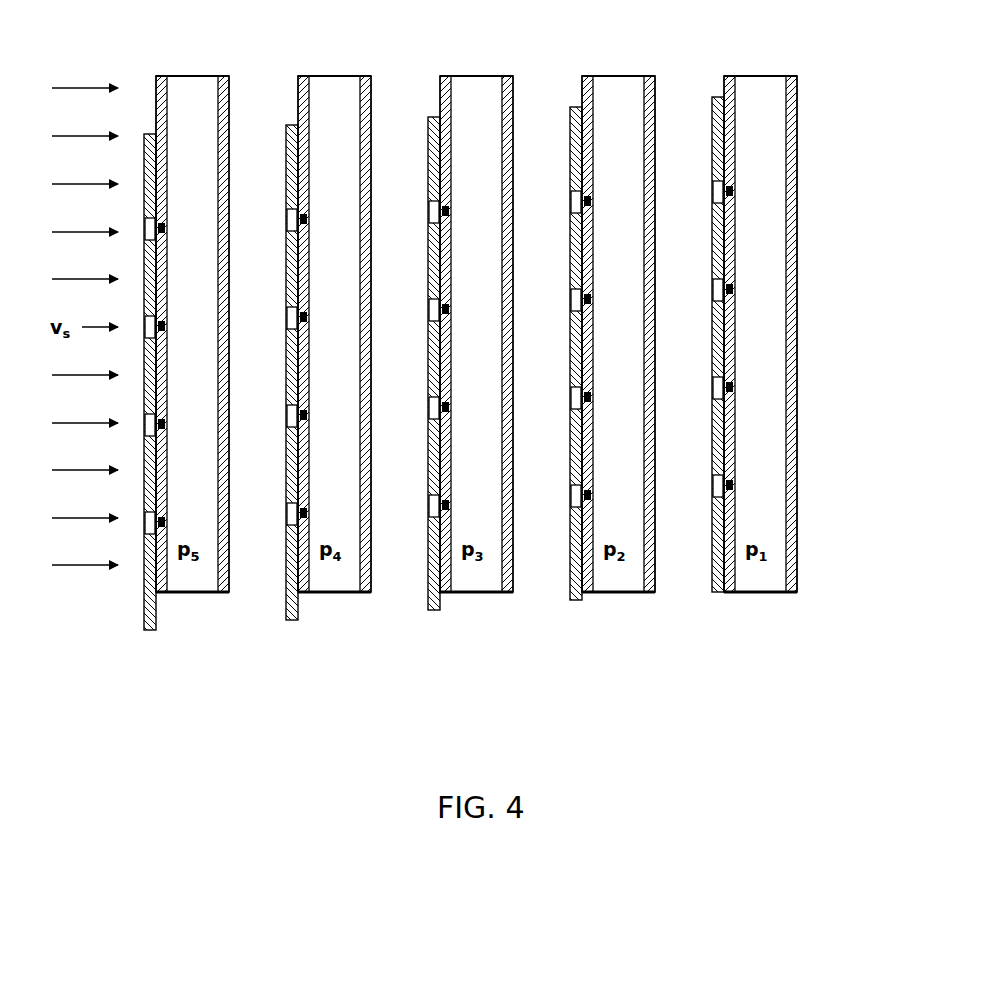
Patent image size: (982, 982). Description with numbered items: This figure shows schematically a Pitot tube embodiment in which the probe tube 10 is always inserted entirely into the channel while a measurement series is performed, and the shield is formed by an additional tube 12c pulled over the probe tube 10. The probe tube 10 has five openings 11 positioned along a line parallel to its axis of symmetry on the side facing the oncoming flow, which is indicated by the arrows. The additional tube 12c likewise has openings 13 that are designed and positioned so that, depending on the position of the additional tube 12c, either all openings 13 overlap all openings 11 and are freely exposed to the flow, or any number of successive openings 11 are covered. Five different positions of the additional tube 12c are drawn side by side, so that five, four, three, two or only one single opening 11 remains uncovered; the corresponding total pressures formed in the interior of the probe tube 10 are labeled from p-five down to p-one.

The probe tube 10 is at (197, 47).
The openings 11 is at (169, 125).
The additional tube 12c is at (146, 632).
The openings 13 is at (278, 308).